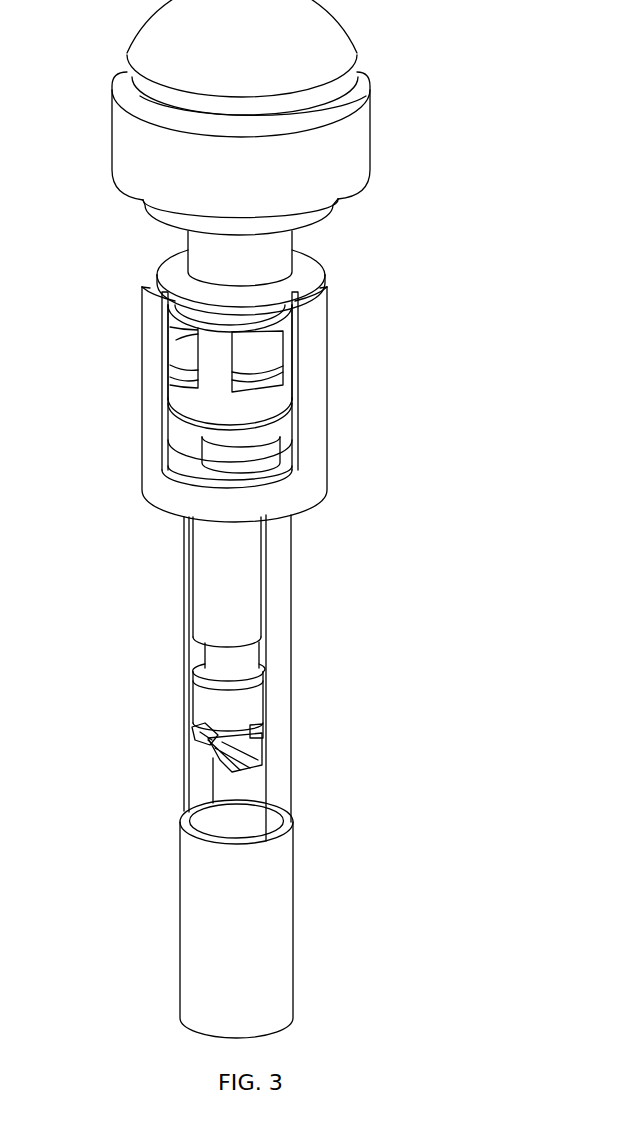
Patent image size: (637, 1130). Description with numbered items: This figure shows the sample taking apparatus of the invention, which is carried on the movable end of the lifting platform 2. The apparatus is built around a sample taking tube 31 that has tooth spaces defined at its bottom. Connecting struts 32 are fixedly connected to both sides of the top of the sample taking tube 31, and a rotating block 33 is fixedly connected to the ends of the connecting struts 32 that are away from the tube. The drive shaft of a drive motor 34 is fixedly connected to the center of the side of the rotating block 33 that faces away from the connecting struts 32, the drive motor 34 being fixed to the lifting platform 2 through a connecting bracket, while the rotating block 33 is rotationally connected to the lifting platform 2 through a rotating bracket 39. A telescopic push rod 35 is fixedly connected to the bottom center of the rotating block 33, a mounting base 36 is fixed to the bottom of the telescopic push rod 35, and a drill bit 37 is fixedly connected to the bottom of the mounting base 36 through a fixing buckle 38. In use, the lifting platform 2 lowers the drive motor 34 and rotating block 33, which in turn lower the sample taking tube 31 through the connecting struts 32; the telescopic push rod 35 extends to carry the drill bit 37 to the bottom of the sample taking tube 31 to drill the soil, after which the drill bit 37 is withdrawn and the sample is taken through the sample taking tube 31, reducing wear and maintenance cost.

The lifting platform 2 is at (215, 190).
The sample taking tube 31 is at (277, 878).
The connecting strut 32 is at (280, 768).
The rotating block 33 is at (280, 468).
The drive motor 34 is at (258, 350).
The telescopic push rod 35 is at (233, 574).
The mounting base 36 is at (243, 705).
The drill bit 37 is at (262, 742).
The fixing buckle 38 is at (200, 728).
The rotating bracket 39 is at (142, 452).